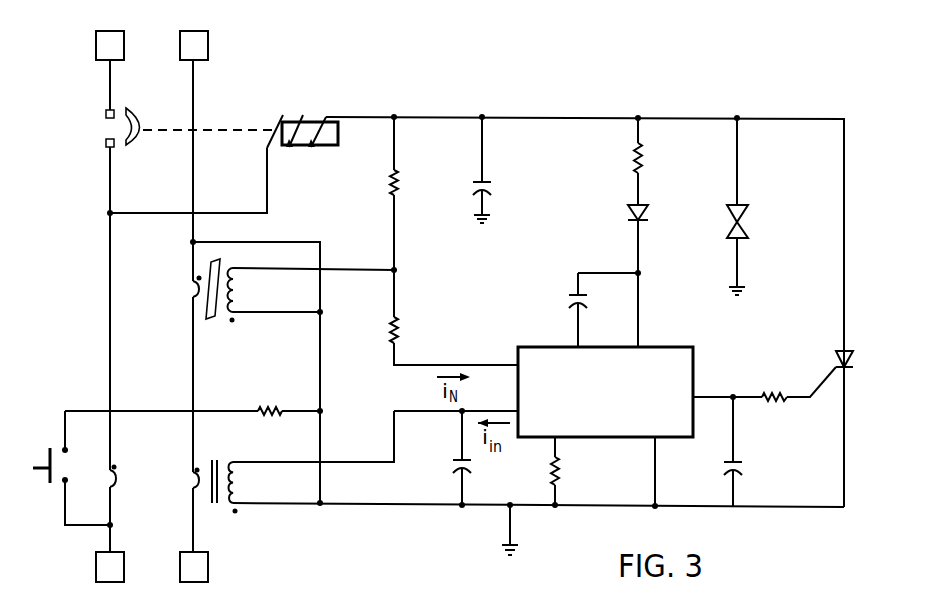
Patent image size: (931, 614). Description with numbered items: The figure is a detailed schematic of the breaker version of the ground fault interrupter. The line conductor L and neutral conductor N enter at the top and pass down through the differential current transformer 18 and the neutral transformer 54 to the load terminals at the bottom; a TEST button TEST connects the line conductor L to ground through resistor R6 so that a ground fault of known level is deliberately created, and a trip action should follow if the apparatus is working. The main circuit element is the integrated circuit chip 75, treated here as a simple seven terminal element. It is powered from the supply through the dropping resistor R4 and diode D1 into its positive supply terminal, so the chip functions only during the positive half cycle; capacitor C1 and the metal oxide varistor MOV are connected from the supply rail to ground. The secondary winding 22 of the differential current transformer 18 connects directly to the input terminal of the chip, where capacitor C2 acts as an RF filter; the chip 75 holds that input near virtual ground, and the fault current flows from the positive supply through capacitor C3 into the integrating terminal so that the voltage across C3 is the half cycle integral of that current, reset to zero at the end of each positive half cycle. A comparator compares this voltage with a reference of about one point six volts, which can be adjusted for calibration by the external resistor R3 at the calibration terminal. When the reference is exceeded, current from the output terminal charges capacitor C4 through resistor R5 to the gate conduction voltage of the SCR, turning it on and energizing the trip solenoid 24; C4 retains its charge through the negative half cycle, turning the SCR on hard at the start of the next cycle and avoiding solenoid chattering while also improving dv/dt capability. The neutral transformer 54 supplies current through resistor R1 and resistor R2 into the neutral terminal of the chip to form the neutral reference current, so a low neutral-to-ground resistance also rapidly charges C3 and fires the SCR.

The line conductor L is at (185, 293).
The neutral conductor N is at (194, 293).
The TEST button TEST is at (71, 468).
The solenoid 24 is at (328, 146).
The neutral transformer 54 is at (242, 362).
The differential current transformer 18 is at (232, 448).
The secondary winding 22 is at (230, 514).
The chip 75 is at (613, 407).
The resistor R1 is at (390, 186).
The resistor R2 is at (390, 330).
The external resistor R3 is at (562, 470).
The dropping resistor R4 is at (645, 158).
The resistor R5 is at (776, 392).
The resistor R6 is at (271, 408).
The capacitor C1 is at (497, 188).
The capacitor C2 is at (455, 460).
The capacitor C3 is at (590, 300).
The capacitor C4 is at (745, 466).
The diode D1 is at (650, 211).
The metal oxide varistor MOV is at (750, 220).
The element SCR is at (840, 349).